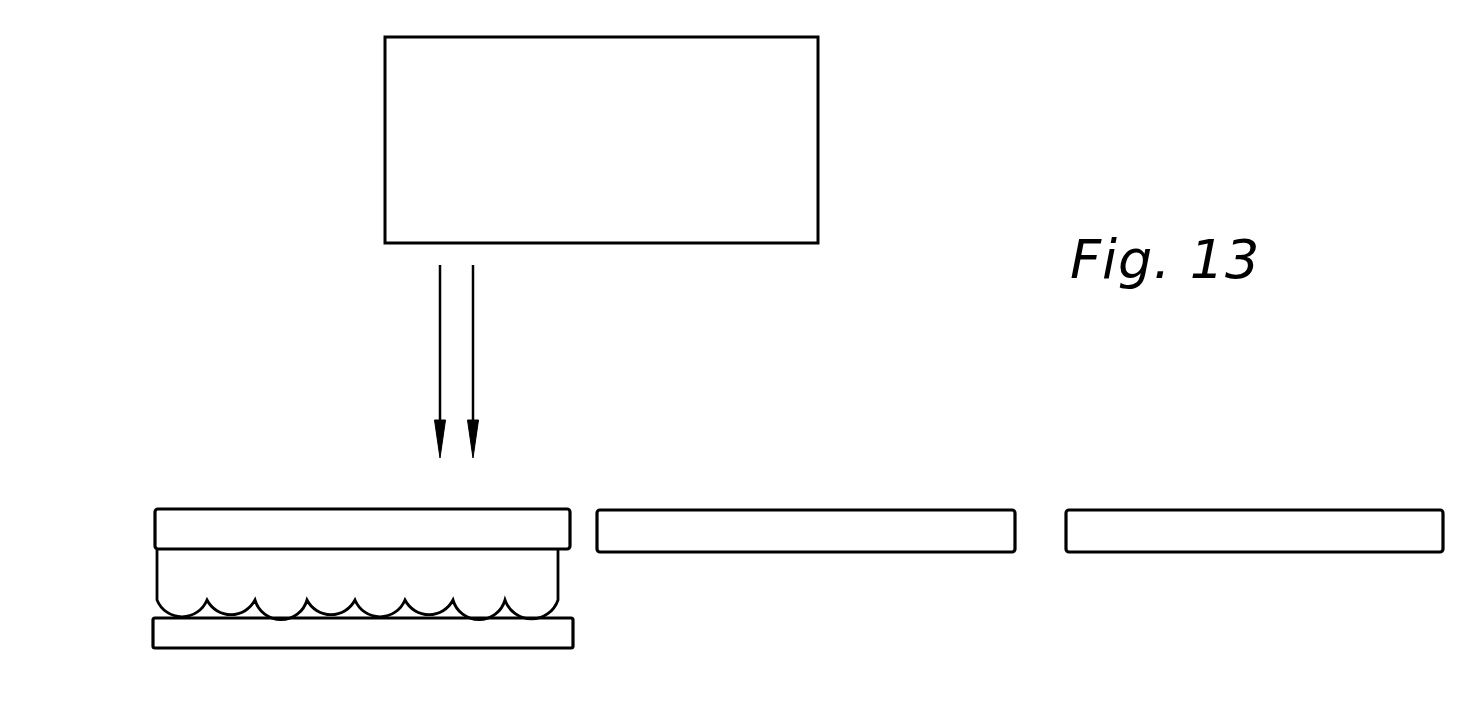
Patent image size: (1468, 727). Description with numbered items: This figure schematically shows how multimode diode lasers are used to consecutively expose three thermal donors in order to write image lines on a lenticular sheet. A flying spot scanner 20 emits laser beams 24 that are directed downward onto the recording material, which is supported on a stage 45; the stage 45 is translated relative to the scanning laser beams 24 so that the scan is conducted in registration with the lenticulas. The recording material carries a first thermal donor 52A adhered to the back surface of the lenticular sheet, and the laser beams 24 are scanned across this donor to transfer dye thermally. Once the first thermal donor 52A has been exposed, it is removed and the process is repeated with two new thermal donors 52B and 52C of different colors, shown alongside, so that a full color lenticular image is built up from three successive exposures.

The flying spot scanner 20 is at (807, 140).
The laser beams 24 is at (438, 358).
The first thermal donor 52A is at (255, 532).
The stage 45 is at (497, 640).
The second thermal donor 52B is at (827, 532).
The third thermal donor 52C is at (1190, 525).